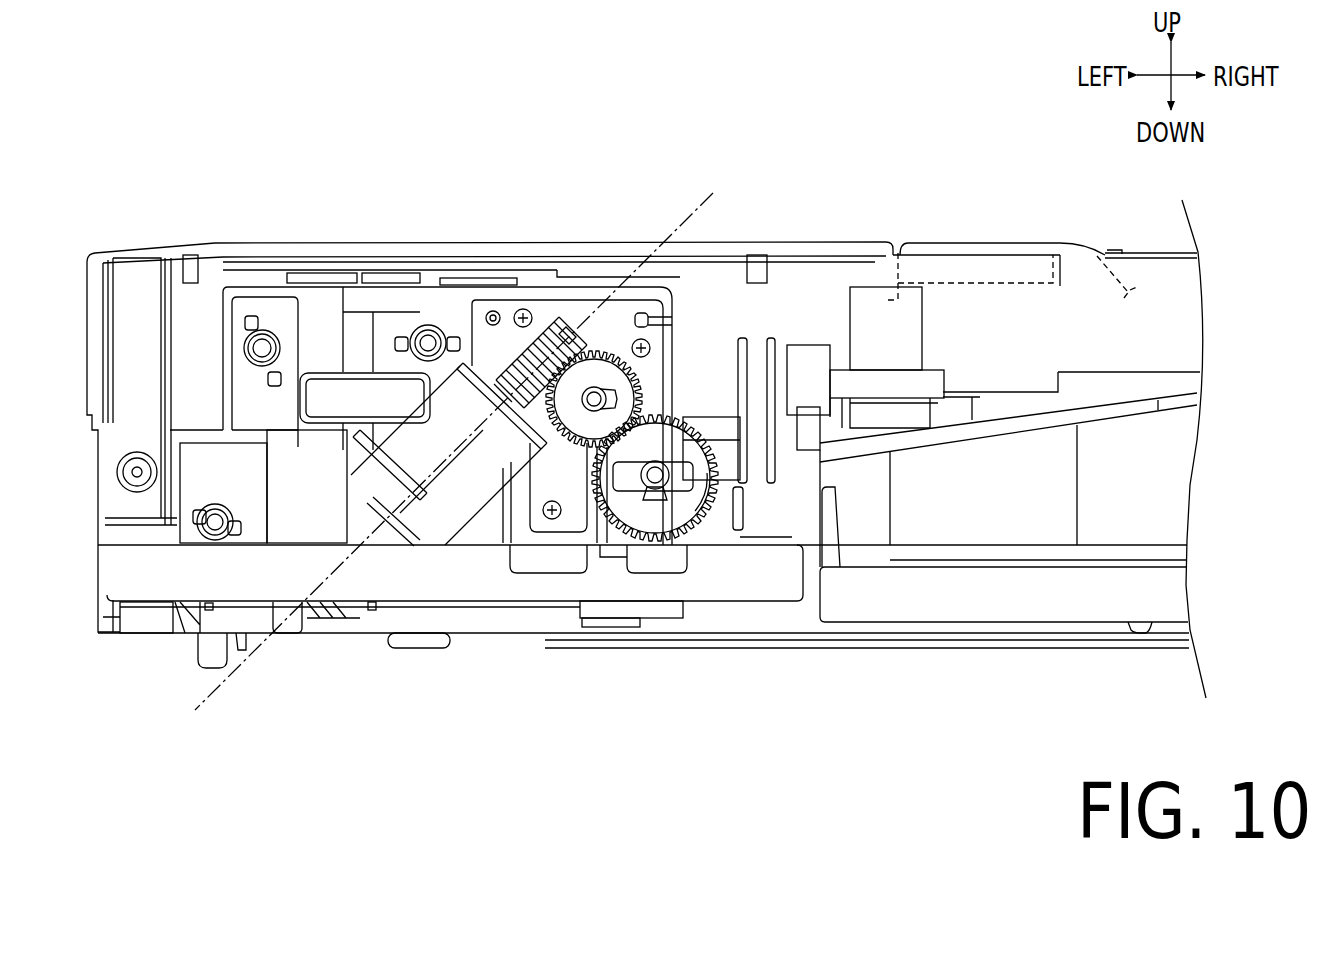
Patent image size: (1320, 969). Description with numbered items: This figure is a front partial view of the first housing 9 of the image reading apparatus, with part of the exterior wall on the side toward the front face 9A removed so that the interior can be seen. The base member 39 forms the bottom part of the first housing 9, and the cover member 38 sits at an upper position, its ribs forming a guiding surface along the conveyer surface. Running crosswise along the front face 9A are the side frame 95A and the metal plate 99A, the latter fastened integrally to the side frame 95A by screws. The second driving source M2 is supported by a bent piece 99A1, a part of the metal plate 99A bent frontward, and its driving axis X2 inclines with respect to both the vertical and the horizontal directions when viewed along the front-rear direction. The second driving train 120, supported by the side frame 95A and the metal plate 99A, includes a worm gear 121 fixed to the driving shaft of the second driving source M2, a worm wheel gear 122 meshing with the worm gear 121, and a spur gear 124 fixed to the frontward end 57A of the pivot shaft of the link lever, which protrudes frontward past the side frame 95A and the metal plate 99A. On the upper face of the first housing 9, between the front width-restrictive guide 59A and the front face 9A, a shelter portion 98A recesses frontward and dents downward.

The first housing 9 is at (646, 392).
The front face 9A is at (1068, 600).
The cover member 38 is at (350, 232).
The base member 39 is at (149, 638).
The frontward end 57A is at (656, 492).
The width-restrictive guide 59A is at (1030, 247).
The side frame 95A is at (322, 328).
The shelter portion 98A is at (983, 252).
The metal plate 99A is at (567, 316).
The bent piece 99A1 is at (492, 310).
The second driving train 120 is at (566, 462).
The worm gear 121 is at (537, 340).
The worm wheel gear 122 is at (598, 432).
The spur gear 124 is at (679, 512).
The second driving source M2 is at (485, 485).
The driving axis X2 is at (467, 438).